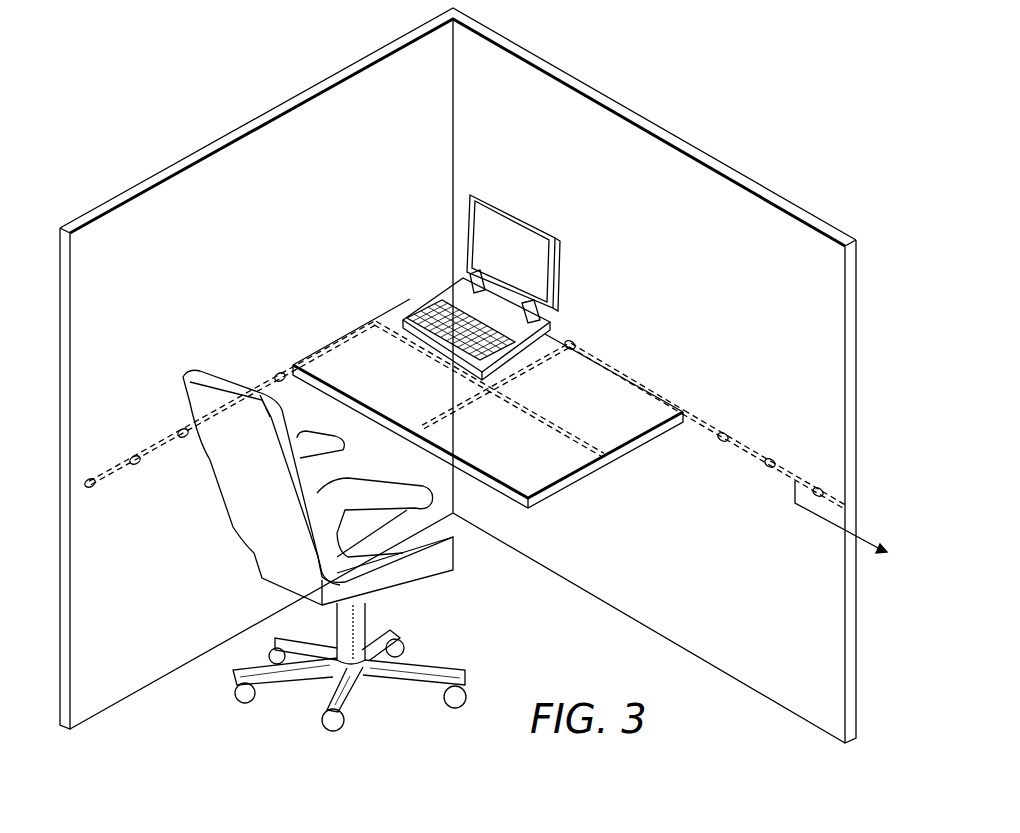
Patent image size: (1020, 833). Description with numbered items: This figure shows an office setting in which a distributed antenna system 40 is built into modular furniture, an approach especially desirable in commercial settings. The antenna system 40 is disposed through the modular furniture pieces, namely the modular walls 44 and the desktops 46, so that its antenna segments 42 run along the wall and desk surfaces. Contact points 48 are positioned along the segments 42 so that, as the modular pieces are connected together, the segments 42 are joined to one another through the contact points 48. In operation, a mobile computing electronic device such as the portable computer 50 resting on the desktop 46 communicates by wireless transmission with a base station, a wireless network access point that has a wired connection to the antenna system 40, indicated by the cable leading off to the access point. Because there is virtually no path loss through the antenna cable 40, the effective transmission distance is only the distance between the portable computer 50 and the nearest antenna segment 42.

The distributed antenna system 40 is at (458, 375).
The antenna segment 42 is at (103, 481).
The modular wall 44 is at (697, 150).
The desktop 46 is at (572, 481).
The contact point 48 is at (370, 322).
The portable computer 50 is at (513, 213).